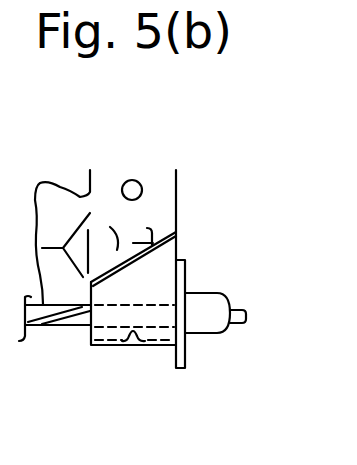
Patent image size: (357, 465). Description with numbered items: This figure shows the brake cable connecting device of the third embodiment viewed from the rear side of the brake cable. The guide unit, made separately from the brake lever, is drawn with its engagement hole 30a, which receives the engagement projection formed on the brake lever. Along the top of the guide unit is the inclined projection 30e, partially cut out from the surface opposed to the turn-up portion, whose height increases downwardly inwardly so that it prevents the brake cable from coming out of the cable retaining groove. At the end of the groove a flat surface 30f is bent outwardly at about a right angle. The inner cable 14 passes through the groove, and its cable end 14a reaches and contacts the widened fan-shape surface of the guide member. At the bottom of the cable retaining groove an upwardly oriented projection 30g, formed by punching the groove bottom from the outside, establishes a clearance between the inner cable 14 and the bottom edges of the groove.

The inner cable 14 is at (60, 326).
The cable end 14a is at (211, 304).
The engagement hole 30a is at (141, 182).
The projection 30e is at (178, 238).
The flat surface 30f is at (187, 356).
The projection 30g is at (134, 346).